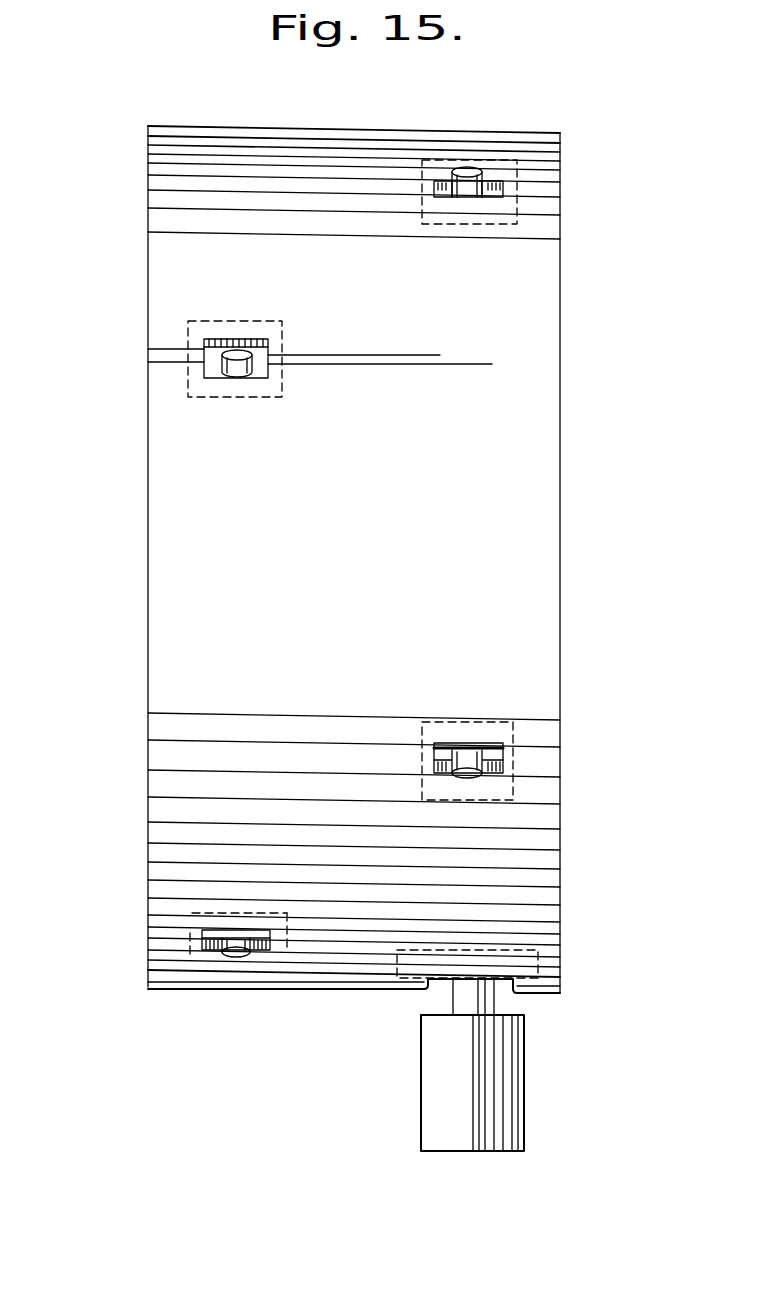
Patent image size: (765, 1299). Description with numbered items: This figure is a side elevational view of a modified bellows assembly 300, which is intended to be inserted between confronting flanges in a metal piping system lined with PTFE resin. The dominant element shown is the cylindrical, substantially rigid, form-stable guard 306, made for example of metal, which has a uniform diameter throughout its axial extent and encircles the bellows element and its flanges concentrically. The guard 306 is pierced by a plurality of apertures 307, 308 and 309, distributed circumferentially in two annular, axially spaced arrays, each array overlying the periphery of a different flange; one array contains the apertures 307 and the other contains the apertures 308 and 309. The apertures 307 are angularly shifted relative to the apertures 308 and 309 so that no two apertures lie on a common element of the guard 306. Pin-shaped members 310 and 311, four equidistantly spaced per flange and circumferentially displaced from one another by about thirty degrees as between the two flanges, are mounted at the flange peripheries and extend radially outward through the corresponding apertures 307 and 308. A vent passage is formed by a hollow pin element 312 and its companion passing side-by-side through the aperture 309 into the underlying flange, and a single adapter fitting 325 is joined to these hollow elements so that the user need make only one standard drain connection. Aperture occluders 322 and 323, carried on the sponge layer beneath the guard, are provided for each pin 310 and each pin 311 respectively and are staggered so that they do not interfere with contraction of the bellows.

The bellows assembly 300 is at (126, 133).
The guard 306 is at (161, 218).
The apertures 307 is at (282, 667).
The apertures 308 is at (531, 458).
The aperture 309 is at (512, 990).
The pin-shaped members 310 is at (240, 348).
The pin-shaped members 311 is at (473, 167).
The hollow pin element 312 is at (460, 995).
The aperture occluder 322 is at (190, 387).
The aperture occluder 323 is at (517, 199).
The adapter fitting 325 is at (524, 1115).